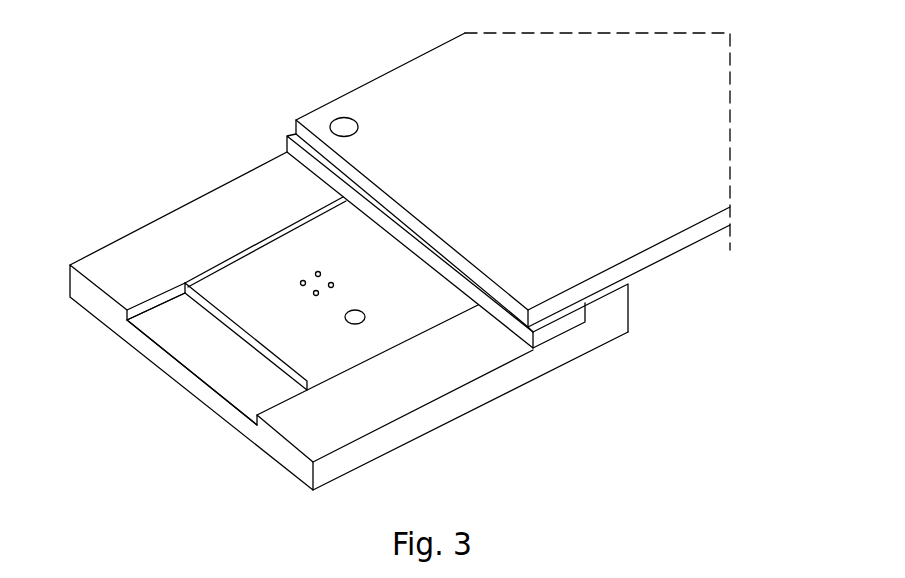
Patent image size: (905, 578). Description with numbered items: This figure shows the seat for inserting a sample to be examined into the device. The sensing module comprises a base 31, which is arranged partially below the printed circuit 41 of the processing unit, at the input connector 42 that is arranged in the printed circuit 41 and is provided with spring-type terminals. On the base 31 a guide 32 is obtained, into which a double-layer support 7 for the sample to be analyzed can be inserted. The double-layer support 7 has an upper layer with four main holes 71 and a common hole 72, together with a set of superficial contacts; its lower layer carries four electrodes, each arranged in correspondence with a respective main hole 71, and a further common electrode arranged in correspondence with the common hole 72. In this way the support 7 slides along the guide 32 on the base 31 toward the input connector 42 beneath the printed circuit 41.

The base 31 is at (522, 375).
The guide 32 is at (220, 377).
The double-layer support 7 is at (257, 331).
The main holes 71 is at (301, 281).
The common hole 72 is at (365, 317).
The printed circuit 41 is at (690, 238).
The input connector 42 is at (580, 318).